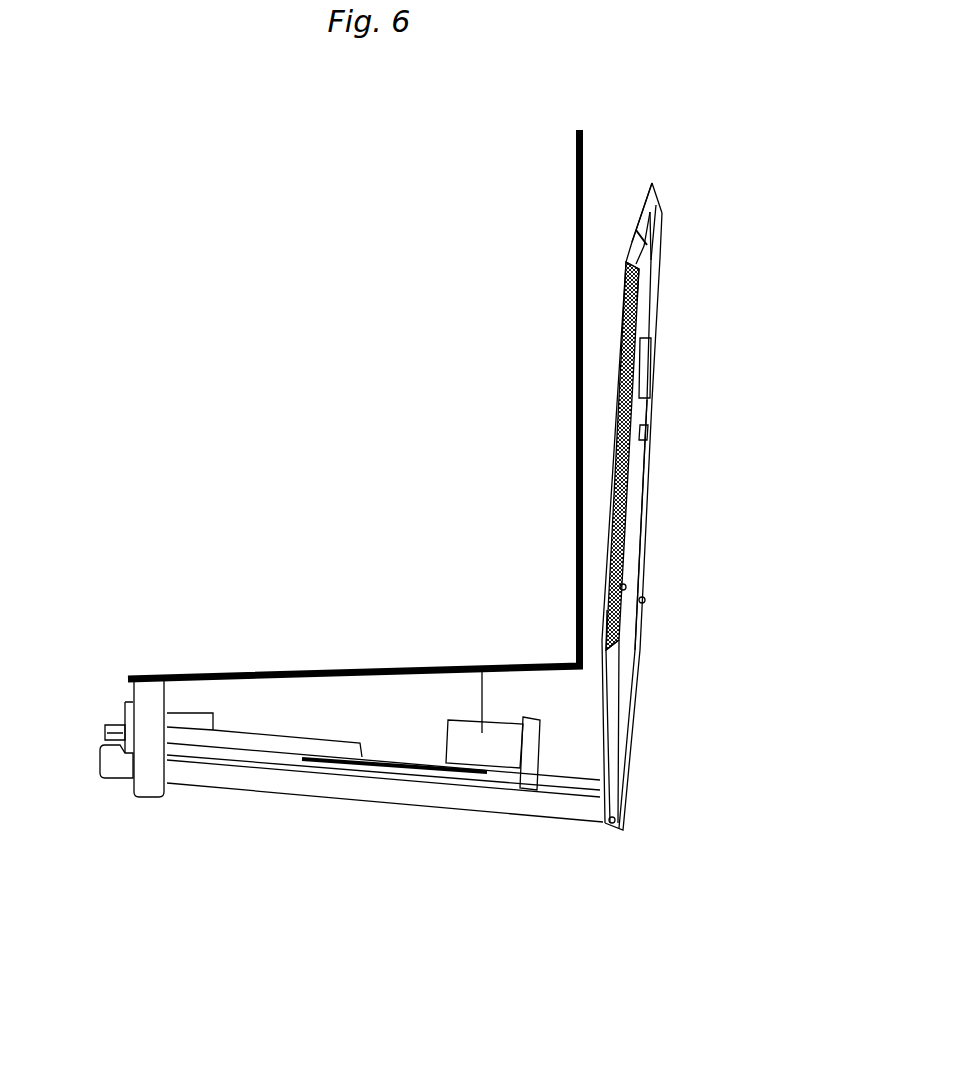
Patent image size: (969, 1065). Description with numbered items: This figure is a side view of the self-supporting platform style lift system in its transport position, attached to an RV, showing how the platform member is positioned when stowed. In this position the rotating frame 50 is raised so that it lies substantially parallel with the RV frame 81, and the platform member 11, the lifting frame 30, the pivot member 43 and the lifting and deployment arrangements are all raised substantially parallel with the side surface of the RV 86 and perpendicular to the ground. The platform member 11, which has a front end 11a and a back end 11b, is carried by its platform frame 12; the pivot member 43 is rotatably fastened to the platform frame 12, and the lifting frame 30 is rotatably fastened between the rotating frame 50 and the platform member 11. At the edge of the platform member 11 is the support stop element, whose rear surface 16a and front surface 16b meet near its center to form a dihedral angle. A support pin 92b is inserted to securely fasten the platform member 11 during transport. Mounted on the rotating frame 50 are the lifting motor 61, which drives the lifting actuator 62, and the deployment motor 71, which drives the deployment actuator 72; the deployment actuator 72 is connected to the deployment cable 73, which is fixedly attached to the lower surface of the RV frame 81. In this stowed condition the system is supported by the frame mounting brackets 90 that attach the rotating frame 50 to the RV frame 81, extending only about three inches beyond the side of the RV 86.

The side surface of the RV 86 is at (578, 255).
The platform frame 12 is at (648, 323).
The rear surface 16a is at (650, 213).
The front surface 16b is at (633, 253).
The platform member 11 is at (617, 500).
The back end 11b is at (625, 292).
The front end 11a is at (607, 622).
The support pin 92b is at (640, 432).
The pivot member 43 is at (630, 523).
The lifting frame 30 is at (618, 728).
The rotating frame 50 is at (203, 787).
The lifting actuator 62 is at (378, 780).
The deployment actuator 72 is at (195, 728).
The RV frame 81 is at (258, 752).
The deployment cable 73 is at (478, 707).
The lifting motor 61 is at (465, 765).
The deployment motor 71 is at (136, 680).
The frame mounting brackets 90 is at (143, 757).